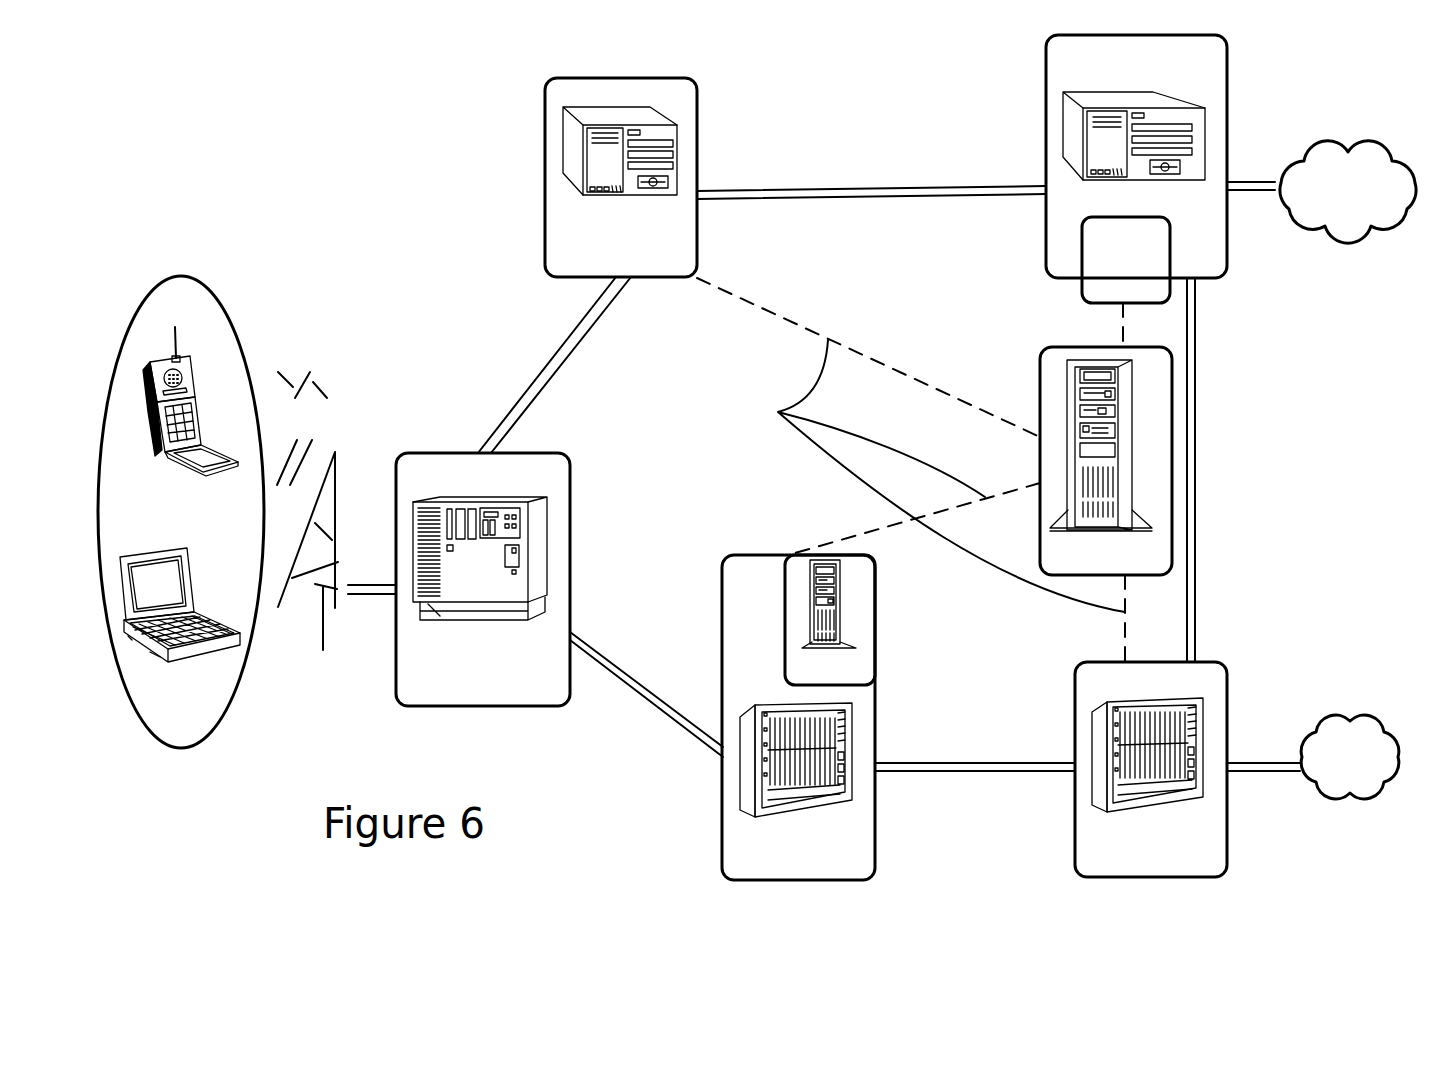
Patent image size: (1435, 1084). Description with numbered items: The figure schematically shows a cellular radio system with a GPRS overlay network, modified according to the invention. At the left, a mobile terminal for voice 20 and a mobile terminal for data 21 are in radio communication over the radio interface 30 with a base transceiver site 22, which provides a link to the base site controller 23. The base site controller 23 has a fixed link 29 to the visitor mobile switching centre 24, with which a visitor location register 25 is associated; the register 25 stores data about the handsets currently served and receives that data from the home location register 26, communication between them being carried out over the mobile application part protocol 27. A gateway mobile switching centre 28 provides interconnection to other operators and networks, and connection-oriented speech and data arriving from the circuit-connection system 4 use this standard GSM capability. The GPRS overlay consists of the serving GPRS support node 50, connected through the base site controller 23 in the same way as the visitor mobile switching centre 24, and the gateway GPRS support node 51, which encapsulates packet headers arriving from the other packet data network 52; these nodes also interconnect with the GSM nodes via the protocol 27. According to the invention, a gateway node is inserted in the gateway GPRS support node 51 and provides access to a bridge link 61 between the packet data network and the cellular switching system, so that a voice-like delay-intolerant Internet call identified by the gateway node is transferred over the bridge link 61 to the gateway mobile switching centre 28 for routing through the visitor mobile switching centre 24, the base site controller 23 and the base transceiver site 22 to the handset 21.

The circuit-connection system 4 is at (1323, 717).
The mobile terminal for voice 20 is at (192, 365).
The mobile terminal for data 21 is at (214, 639).
The base transceiver site 22 is at (347, 463).
The base site controller 23 is at (530, 452).
The visitor mobile switching centre 24 is at (875, 795).
The visitor location register 25 is at (875, 583).
The home location register 26 is at (1040, 373).
The mobile application part protocol 27 is at (936, 476).
The gateway mobile switching centre 28 is at (1075, 697).
The fixed link 29 is at (642, 700).
The radio interface 30 is at (325, 387).
The serving GPRS support node 50 is at (660, 77).
The gateway GPRS support node 51 is at (1057, 57).
The other packet data network 52 is at (1327, 142).
The bridge link 61 is at (1196, 460).